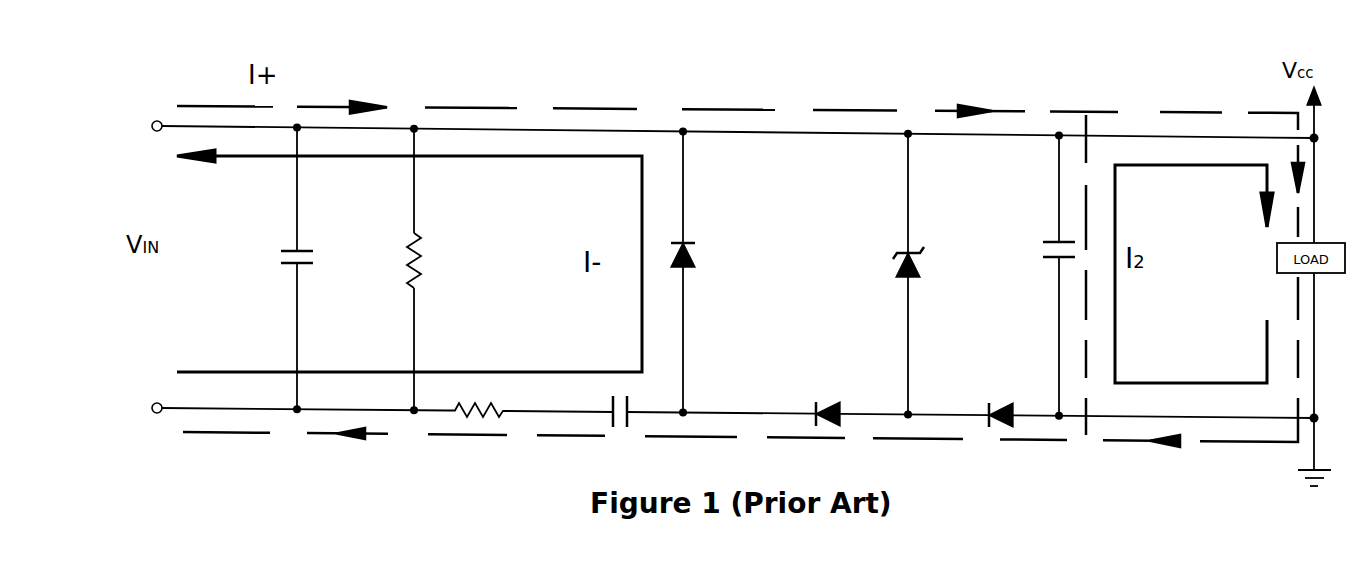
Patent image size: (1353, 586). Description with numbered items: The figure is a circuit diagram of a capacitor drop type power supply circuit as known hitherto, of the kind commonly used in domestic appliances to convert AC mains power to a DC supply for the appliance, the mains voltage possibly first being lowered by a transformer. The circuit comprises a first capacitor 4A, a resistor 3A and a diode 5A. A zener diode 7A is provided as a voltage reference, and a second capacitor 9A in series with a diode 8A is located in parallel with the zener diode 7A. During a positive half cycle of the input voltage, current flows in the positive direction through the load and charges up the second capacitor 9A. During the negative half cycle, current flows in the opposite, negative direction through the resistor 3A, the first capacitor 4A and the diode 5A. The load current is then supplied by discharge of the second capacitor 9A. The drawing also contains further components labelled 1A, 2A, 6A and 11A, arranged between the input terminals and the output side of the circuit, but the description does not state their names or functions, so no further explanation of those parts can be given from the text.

The input capacitor 1A is at (273, 269).
The resistor 2A is at (391, 270).
The resistor 3A is at (479, 394).
The first capacitor 4A is at (608, 399).
The diode 5A is at (664, 188).
The diode 6A is at (815, 399).
The zener diode 7A is at (883, 274).
The diode 8A is at (986, 399).
The second capacitor 9A is at (1035, 275).
The diode 11A is at (714, 323).